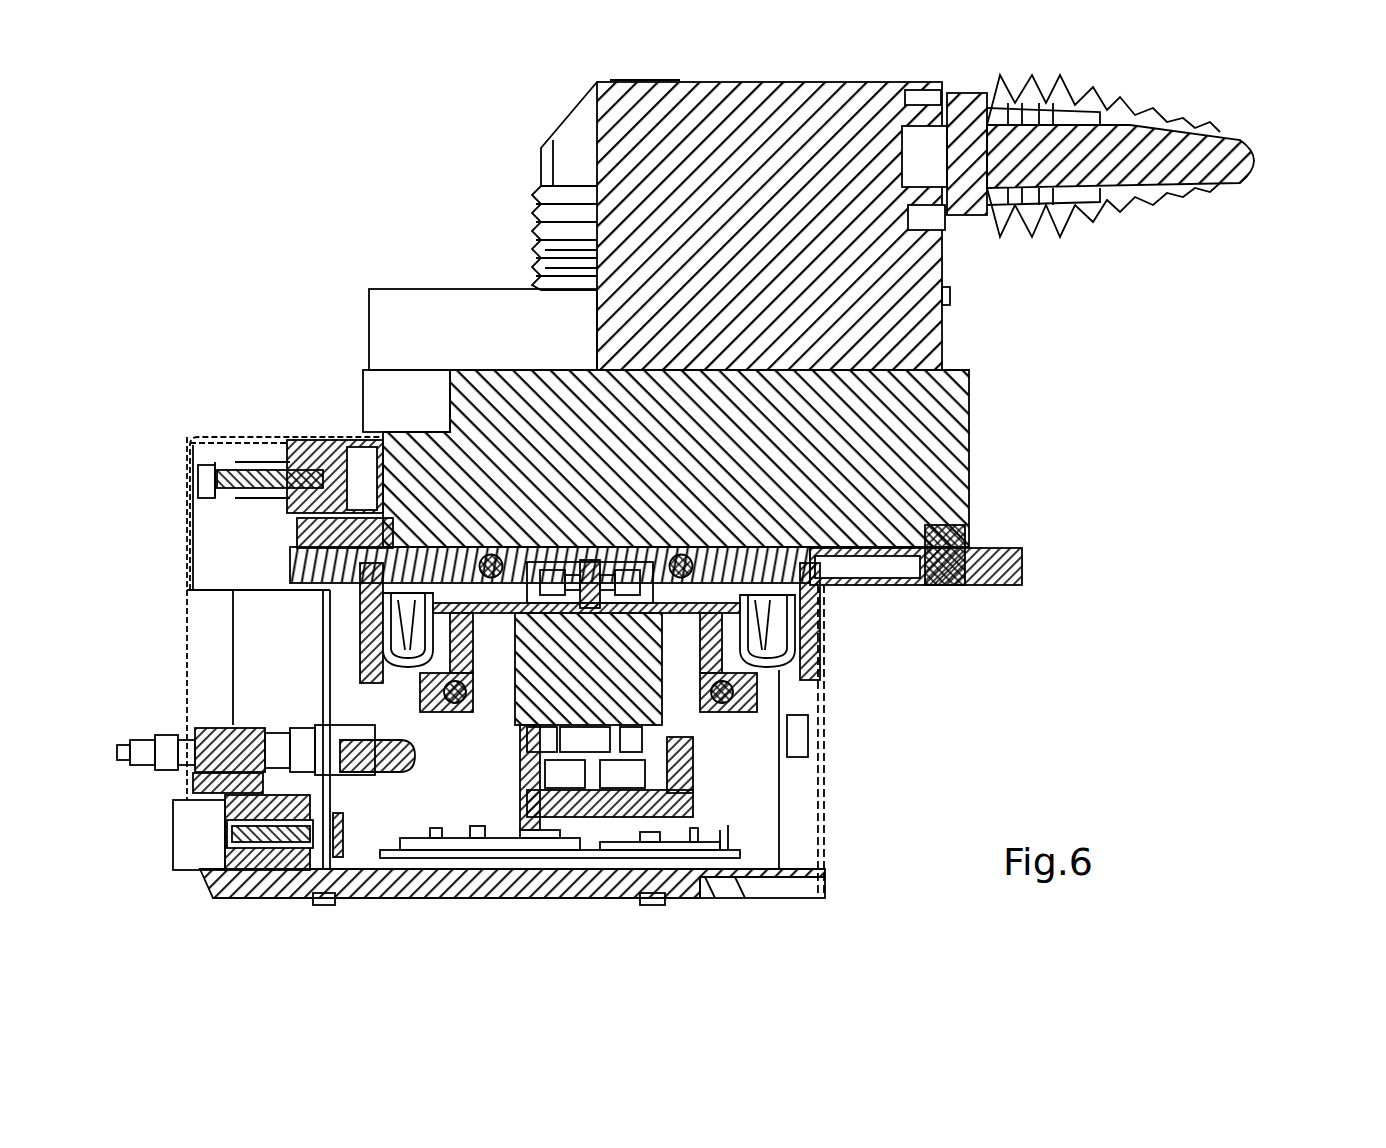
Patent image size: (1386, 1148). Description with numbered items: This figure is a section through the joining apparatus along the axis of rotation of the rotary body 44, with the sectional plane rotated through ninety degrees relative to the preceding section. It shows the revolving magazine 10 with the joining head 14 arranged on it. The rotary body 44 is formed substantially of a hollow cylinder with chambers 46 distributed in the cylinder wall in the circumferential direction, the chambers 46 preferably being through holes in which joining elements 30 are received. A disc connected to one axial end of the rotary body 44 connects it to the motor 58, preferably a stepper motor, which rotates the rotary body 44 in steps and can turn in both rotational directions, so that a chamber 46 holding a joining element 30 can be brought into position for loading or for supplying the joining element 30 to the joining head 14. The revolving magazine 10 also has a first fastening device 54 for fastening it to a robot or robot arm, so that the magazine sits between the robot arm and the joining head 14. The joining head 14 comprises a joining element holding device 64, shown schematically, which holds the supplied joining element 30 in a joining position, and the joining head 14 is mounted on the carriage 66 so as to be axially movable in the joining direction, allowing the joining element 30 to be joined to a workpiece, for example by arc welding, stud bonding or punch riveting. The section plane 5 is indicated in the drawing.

The joining head 14 is at (508, 172).
The joining element holding device 64 is at (1215, 124).
The carriage 66 is at (415, 346).
The sensor plate 5 is at (780, 568).
The revolving magazine 10 is at (1040, 605).
The rotary body 44 is at (822, 600).
The joining element 30 is at (822, 634).
The motor 58 is at (640, 690).
The chamber 46 is at (824, 675).
The first fastening device 54 is at (500, 900).